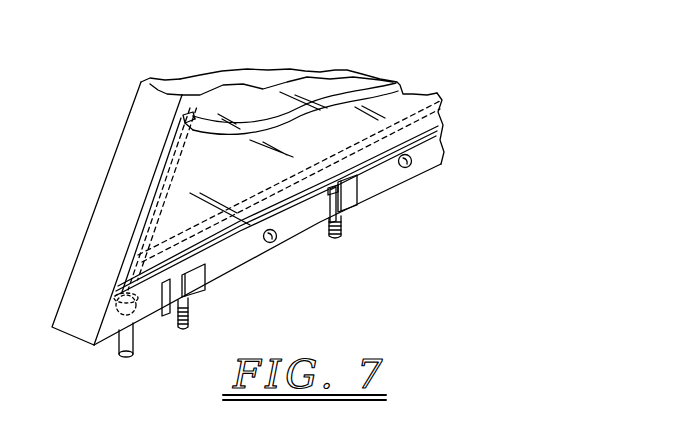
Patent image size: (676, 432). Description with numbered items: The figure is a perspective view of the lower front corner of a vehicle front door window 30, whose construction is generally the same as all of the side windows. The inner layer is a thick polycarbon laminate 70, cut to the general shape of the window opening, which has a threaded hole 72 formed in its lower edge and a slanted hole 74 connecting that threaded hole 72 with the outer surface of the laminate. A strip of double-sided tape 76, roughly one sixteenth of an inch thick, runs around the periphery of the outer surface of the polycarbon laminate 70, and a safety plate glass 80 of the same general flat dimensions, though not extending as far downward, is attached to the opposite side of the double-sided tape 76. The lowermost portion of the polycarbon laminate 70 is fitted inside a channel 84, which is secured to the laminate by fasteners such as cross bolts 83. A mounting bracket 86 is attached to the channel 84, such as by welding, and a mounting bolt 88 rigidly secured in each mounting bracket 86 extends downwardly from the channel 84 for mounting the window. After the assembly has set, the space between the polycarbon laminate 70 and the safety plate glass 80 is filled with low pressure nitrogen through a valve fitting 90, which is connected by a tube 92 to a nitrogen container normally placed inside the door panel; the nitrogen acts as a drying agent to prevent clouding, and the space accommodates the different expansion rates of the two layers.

The front door window 30 is at (118, 118).
The polycarbon laminate 70 is at (124, 225).
The threaded hole 72 is at (121, 270).
The slanted hole 74 is at (166, 234).
The double-sided tape 76 is at (196, 118).
The safety plate glass 80 is at (258, 177).
The cross bolts 83 is at (271, 243).
The channel 84 is at (310, 228).
The mounting bracket 86 is at (204, 292).
The mounting bolt 88 is at (190, 323).
The valve fitting 90 is at (138, 306).
The tube 92 is at (121, 344).